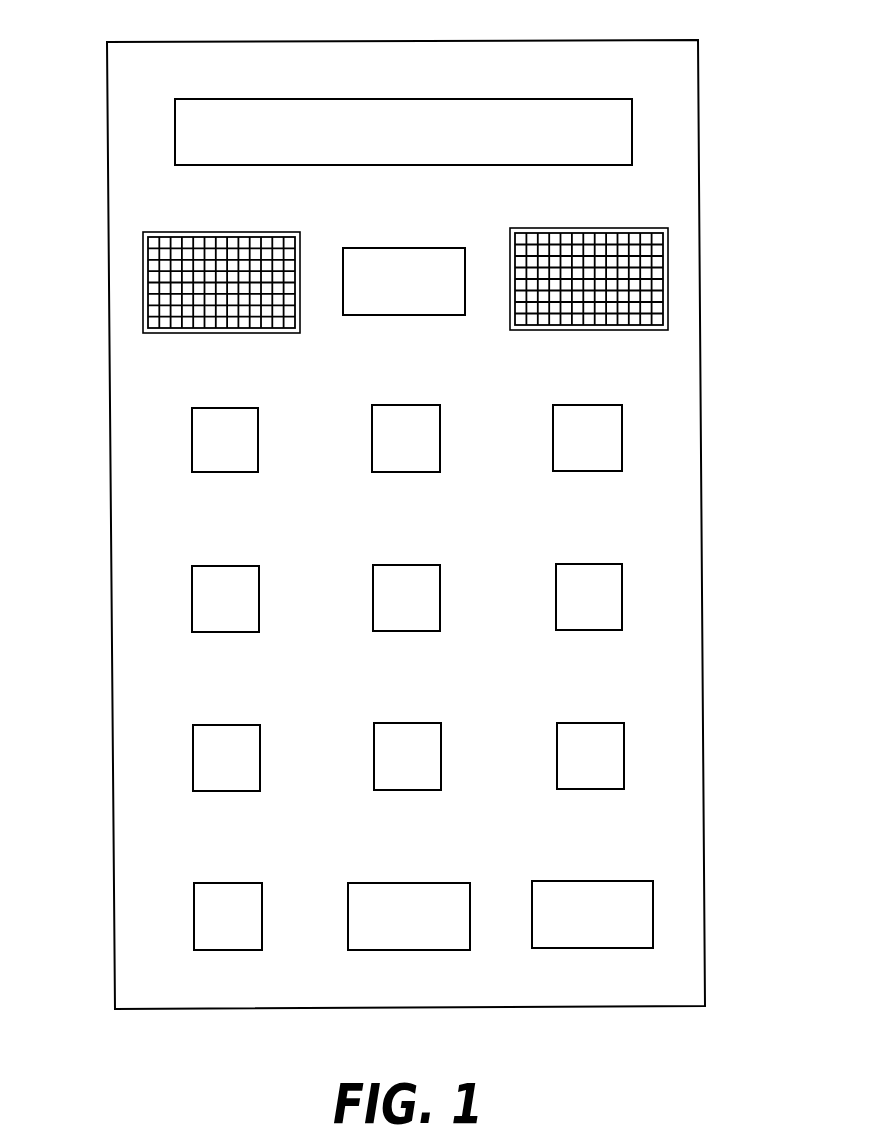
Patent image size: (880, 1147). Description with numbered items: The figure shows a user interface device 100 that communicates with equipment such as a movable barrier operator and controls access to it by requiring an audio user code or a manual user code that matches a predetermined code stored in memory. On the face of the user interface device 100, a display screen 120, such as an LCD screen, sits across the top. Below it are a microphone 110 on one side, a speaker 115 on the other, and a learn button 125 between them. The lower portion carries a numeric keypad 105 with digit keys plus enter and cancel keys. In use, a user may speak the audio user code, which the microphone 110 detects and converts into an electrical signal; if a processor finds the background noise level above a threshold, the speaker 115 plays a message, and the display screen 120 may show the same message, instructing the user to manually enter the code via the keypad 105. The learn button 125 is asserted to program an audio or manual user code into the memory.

The user interface device 100 is at (698, 80).
The keypad 105 is at (663, 543).
The microphone 110 is at (165, 333).
The speaker 115 is at (645, 330).
The display screen 120 is at (260, 99).
The learn button 125 is at (383, 248).